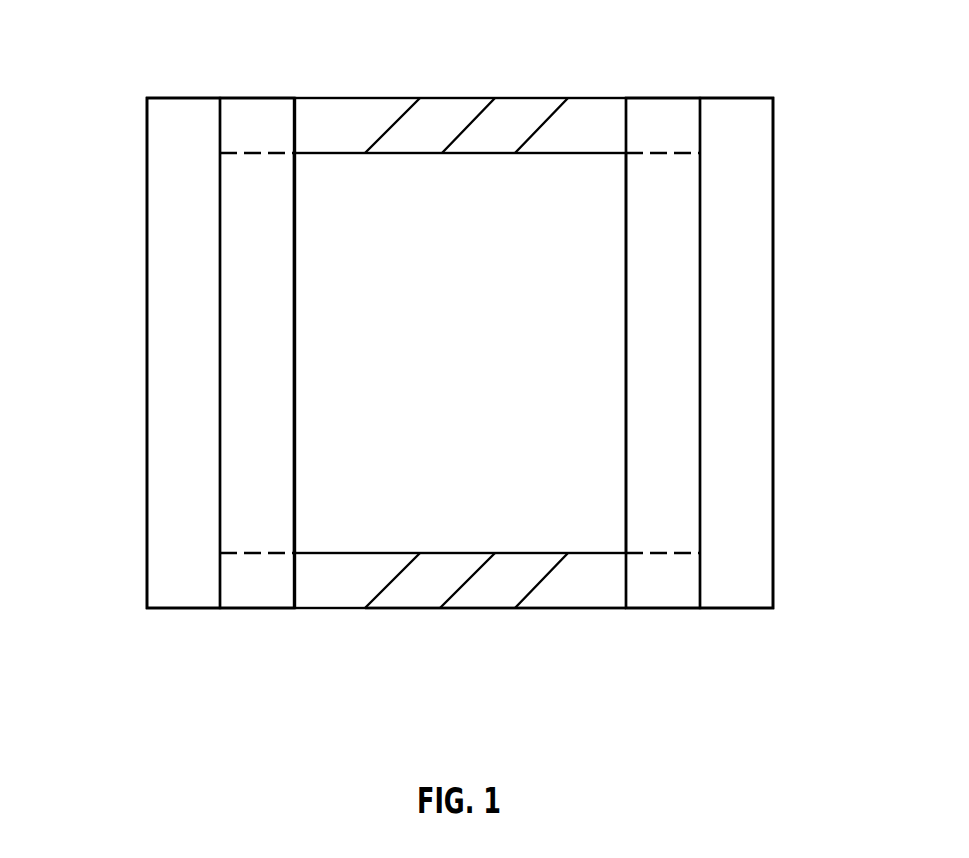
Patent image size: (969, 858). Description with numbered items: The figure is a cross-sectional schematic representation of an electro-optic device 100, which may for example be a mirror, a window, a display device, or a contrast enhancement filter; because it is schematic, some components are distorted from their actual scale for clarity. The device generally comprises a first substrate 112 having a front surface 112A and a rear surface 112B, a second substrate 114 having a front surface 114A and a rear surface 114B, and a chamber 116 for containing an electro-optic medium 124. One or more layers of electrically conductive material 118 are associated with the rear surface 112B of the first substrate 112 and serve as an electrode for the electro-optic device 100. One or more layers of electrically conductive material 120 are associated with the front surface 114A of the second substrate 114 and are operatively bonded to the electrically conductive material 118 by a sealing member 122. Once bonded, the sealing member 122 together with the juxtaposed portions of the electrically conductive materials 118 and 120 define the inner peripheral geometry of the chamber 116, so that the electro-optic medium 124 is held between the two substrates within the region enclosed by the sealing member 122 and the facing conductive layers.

The electro-optic device 100 is at (752, 73).
The first substrate 112 is at (734, 608).
The front surface 112A is at (773, 278).
The rear surface 112B is at (700, 193).
The second substrate 114 is at (185, 608).
The front surface 114A is at (220, 193).
The rear surface 114B is at (220, 278).
The chamber 116 is at (477, 357).
The electrically conductive material 118 is at (666, 522).
The electrically conductive material 120 is at (253, 522).
The sealing member 122 is at (363, 112).
The electro-optic medium 124 is at (547, 513).